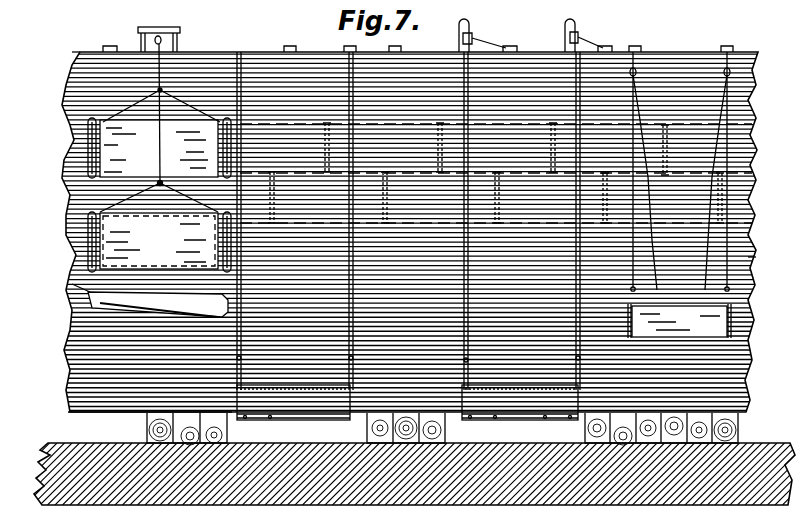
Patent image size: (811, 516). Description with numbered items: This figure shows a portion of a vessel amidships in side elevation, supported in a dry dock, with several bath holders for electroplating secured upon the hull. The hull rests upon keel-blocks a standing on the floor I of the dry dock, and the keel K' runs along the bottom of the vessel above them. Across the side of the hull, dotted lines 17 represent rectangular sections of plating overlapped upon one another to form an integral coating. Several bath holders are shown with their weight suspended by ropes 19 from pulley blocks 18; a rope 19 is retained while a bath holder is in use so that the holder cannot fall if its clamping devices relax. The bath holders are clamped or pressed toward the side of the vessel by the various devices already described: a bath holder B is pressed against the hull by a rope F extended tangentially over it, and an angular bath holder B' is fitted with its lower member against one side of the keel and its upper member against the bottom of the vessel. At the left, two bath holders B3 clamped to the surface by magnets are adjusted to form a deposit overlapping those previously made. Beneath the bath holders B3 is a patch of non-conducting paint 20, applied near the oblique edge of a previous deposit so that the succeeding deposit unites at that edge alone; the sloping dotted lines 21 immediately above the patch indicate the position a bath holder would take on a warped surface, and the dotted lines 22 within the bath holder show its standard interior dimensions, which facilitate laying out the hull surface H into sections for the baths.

The dotted lines 17 is at (690, 125).
The pulley blocks 18 is at (730, 72).
The ropes 19 is at (633, 107).
The patch of paint 20 is at (214, 311).
The sloping dotted lines 21 is at (72, 284).
The dotted lines 22 is at (218, 245).
The bath holders B3 is at (159, 195).
The bath holder B' is at (407, 414).
The bath holder B is at (679, 321).
The rope F is at (628, 248).
The wall siding H is at (72, 352).
The keel K' is at (150, 420).
The floor I is at (48, 445).
The keel-blocks a is at (755, 430).